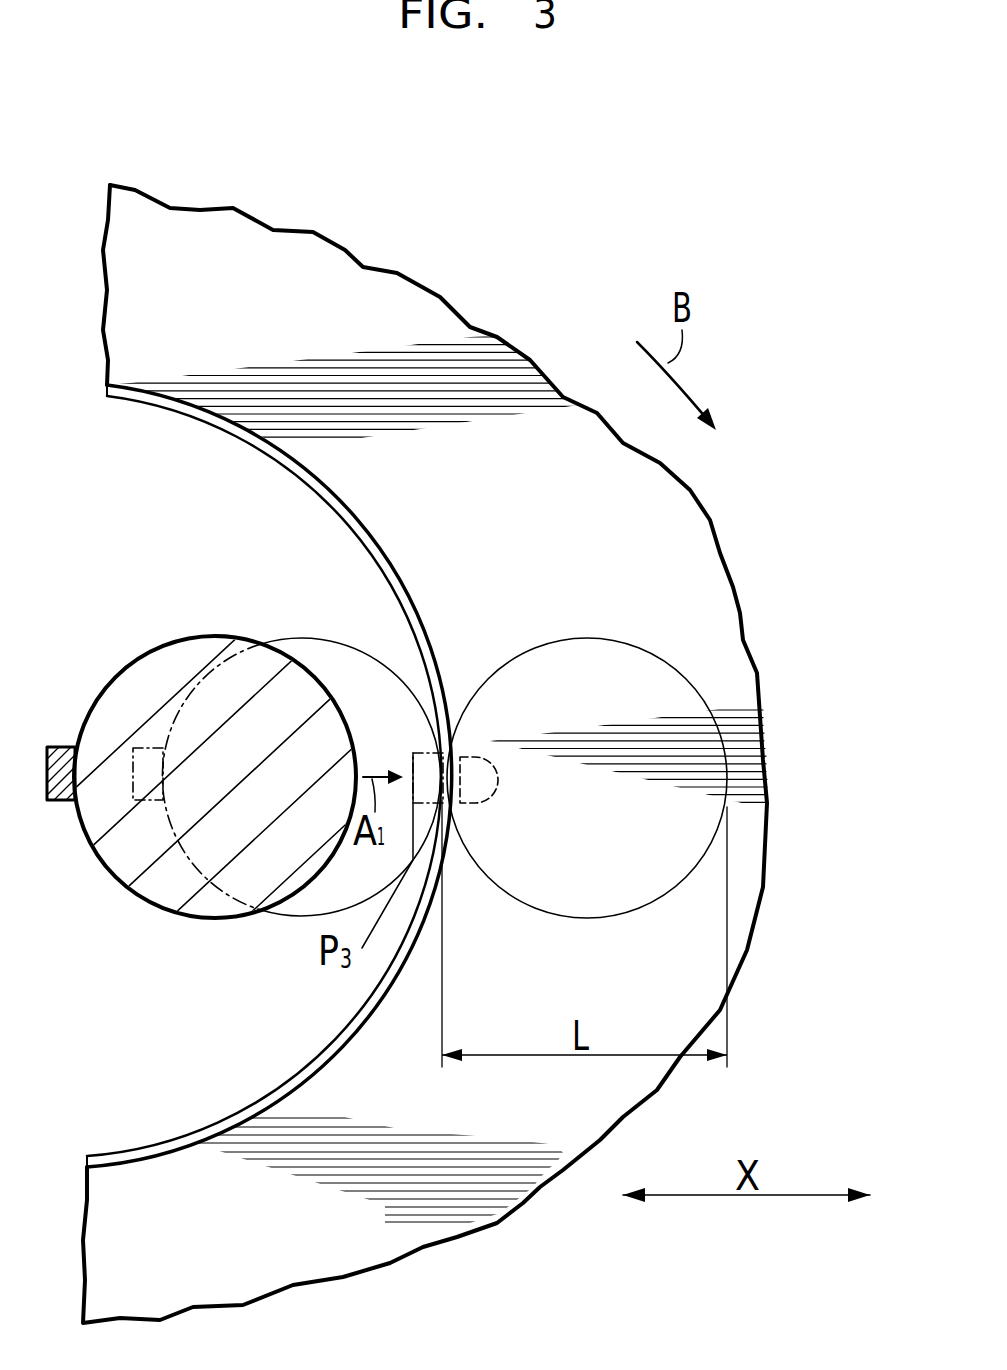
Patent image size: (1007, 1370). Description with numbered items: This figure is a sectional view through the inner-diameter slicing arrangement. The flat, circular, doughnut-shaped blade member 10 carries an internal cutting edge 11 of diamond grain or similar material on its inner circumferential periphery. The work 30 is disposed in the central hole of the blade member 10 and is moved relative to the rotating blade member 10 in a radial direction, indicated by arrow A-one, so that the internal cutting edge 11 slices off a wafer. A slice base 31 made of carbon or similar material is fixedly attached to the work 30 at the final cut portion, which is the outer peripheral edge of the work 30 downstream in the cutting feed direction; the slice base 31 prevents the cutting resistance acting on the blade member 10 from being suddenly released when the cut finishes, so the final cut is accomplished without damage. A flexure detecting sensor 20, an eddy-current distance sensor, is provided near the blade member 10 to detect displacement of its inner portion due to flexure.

The blade member 10 is at (357, 285).
The internal cutting edge 11 is at (157, 403).
The flexure detecting sensor 20 is at (480, 755).
The work 30 is at (100, 698).
The slice base 31 is at (58, 746).